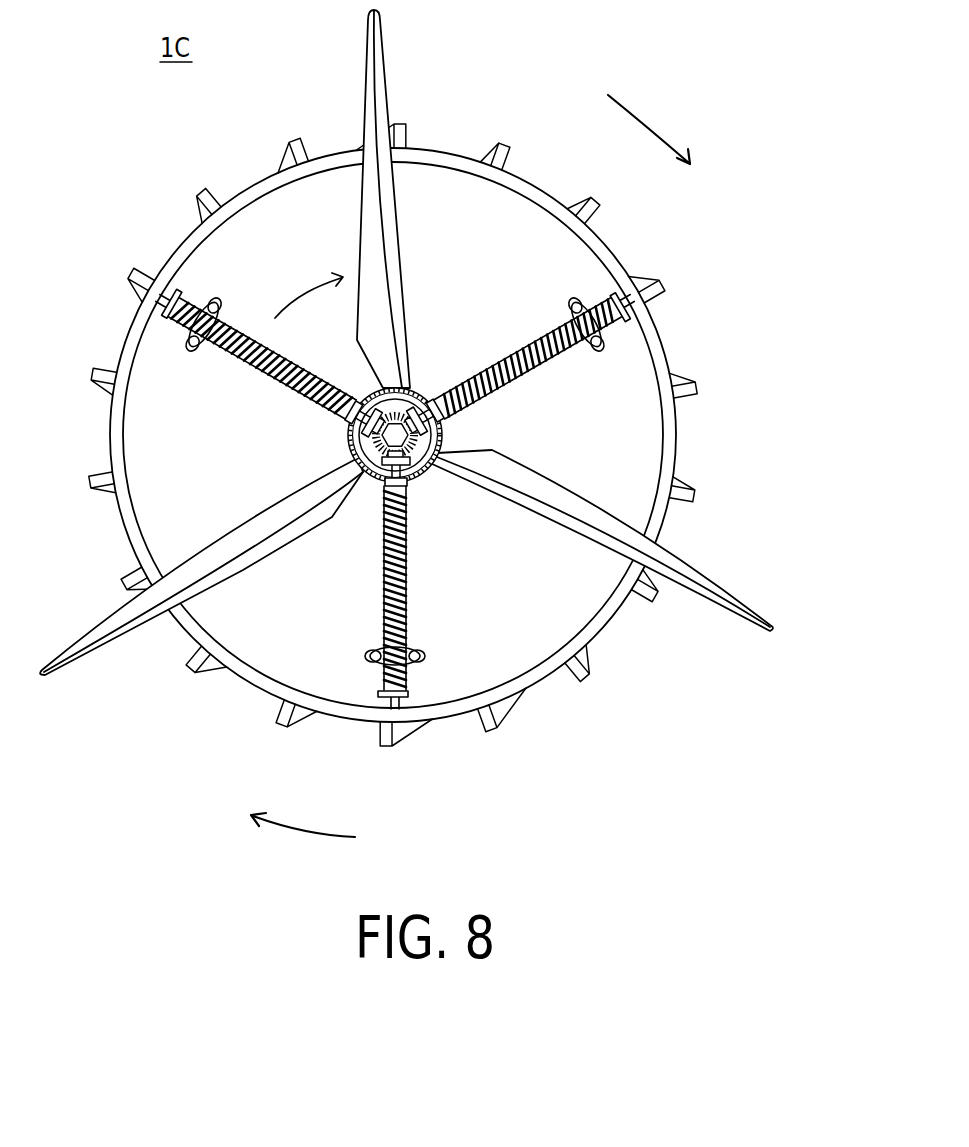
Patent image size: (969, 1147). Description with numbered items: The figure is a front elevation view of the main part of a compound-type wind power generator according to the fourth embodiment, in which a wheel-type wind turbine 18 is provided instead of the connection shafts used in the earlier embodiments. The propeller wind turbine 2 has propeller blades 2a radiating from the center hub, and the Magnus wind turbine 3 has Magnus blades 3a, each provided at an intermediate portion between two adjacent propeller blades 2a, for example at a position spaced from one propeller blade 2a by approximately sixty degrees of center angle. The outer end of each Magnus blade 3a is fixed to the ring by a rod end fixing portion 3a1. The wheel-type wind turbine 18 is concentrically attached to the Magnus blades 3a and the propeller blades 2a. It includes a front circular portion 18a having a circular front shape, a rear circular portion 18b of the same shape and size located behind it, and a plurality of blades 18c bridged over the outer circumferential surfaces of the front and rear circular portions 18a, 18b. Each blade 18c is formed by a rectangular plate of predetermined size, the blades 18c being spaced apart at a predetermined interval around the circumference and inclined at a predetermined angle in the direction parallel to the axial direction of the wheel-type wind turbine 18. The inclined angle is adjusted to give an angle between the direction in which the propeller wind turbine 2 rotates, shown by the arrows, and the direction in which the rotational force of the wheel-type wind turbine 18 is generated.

The propeller wind turbine 2 is at (351, 102).
The propeller blade 2a is at (386, 72).
The Magnus wind turbine 3 is at (500, 339).
The Magnus blade 3a is at (255, 372).
The rod end fixing portion 3a1 is at (178, 300).
The wheel-type wind turbine 18 is at (628, 257).
The front circular portion 18a is at (393, 435).
The rear circular portion 18b is at (393, 435).
The blade 18c is at (278, 145).